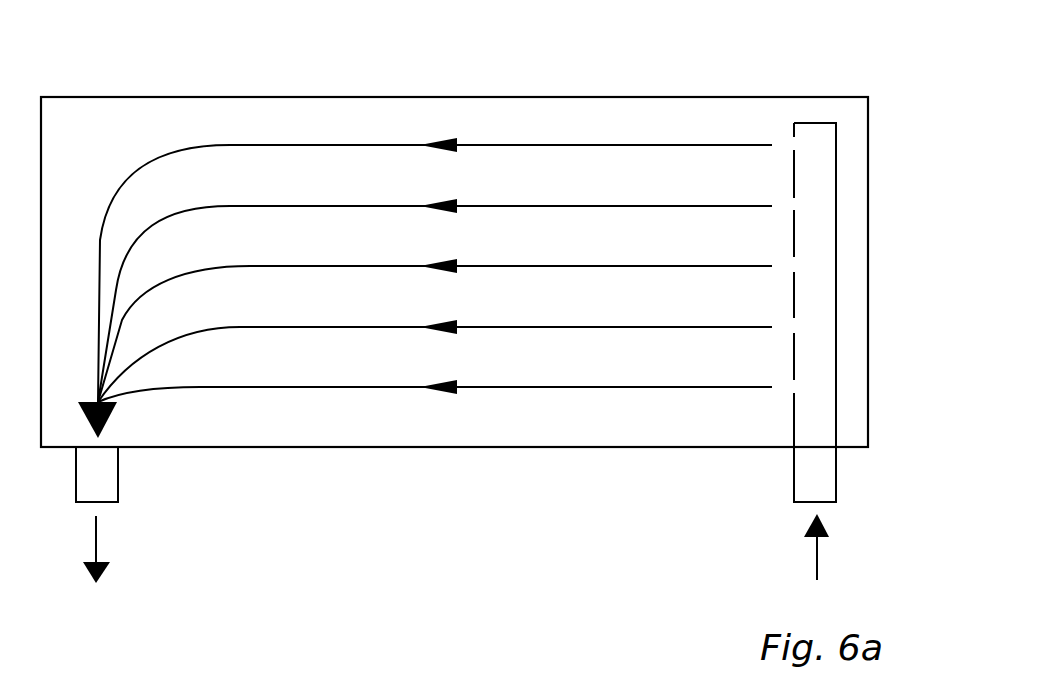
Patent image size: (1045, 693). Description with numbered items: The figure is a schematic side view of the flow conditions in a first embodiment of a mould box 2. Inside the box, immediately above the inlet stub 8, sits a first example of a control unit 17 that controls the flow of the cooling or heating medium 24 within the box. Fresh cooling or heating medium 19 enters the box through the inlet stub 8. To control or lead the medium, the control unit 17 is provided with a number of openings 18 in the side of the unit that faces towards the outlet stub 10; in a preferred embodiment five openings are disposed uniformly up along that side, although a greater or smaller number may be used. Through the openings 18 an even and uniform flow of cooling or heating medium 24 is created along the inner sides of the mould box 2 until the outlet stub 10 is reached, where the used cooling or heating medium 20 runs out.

The mould box 2 is at (412, 491).
The inlet stub 8 is at (795, 498).
The outlet stub 10 is at (117, 478).
The control unit 17 is at (827, 123).
The openings 18 is at (794, 385).
The fresh cooling or heating medium 19 is at (817, 577).
The used cooling or heating medium 20 is at (97, 543).
The cooling or heating medium 24 is at (540, 200).